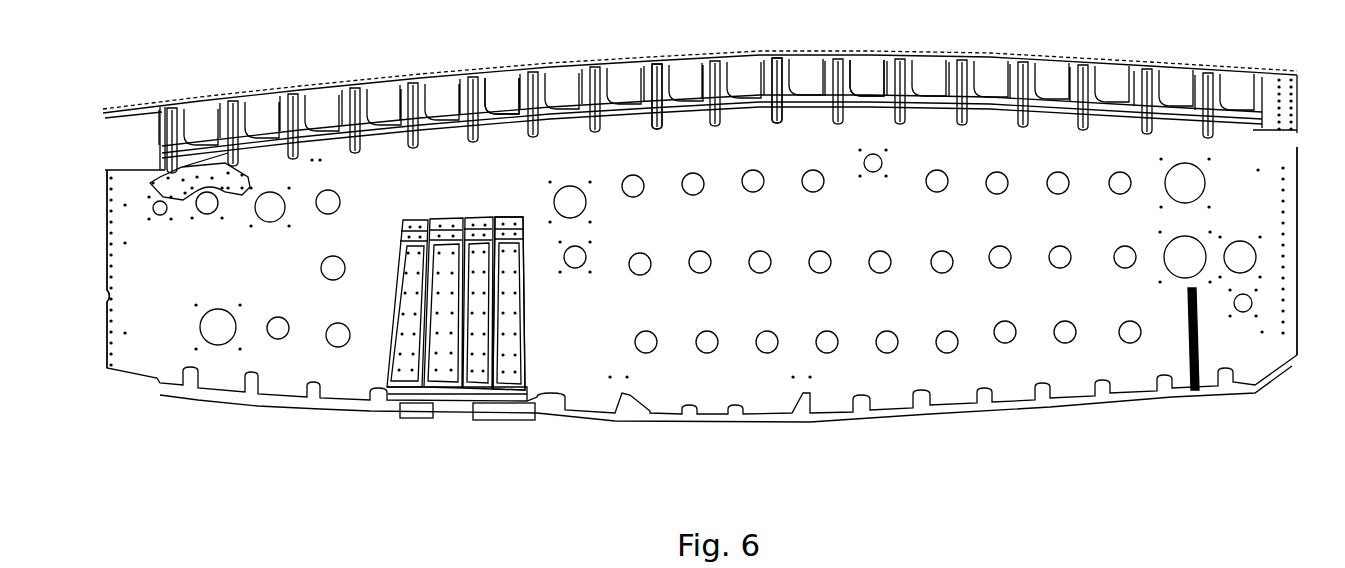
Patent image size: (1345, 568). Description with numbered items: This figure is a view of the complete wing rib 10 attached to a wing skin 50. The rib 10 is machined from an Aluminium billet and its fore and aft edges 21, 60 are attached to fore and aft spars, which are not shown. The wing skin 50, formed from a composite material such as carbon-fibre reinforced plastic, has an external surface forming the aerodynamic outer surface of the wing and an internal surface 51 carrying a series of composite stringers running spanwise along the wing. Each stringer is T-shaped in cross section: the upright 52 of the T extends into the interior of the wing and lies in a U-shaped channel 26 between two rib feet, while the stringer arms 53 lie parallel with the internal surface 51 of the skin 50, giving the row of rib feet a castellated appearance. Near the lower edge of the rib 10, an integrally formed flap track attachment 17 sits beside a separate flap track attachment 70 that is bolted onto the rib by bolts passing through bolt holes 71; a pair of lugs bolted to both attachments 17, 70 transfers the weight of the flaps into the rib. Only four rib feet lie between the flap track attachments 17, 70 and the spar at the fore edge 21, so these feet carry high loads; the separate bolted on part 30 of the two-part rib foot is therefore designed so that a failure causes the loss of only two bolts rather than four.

The rib 10 is at (652, 435).
The flap track attachment 17 is at (503, 421).
The fore edge 21 is at (107, 323).
The U-shaped channel 26 is at (667, 130).
The bolted on part 30 is at (232, 212).
The wing skin 50 is at (567, 66).
The internal surface 51 is at (505, 122).
The upright 52 is at (782, 82).
The stringer arms 53 is at (855, 78).
The aft edge 60 is at (1297, 187).
The flap track attachment 70 is at (445, 219).
The bolt holes 71 is at (524, 307).